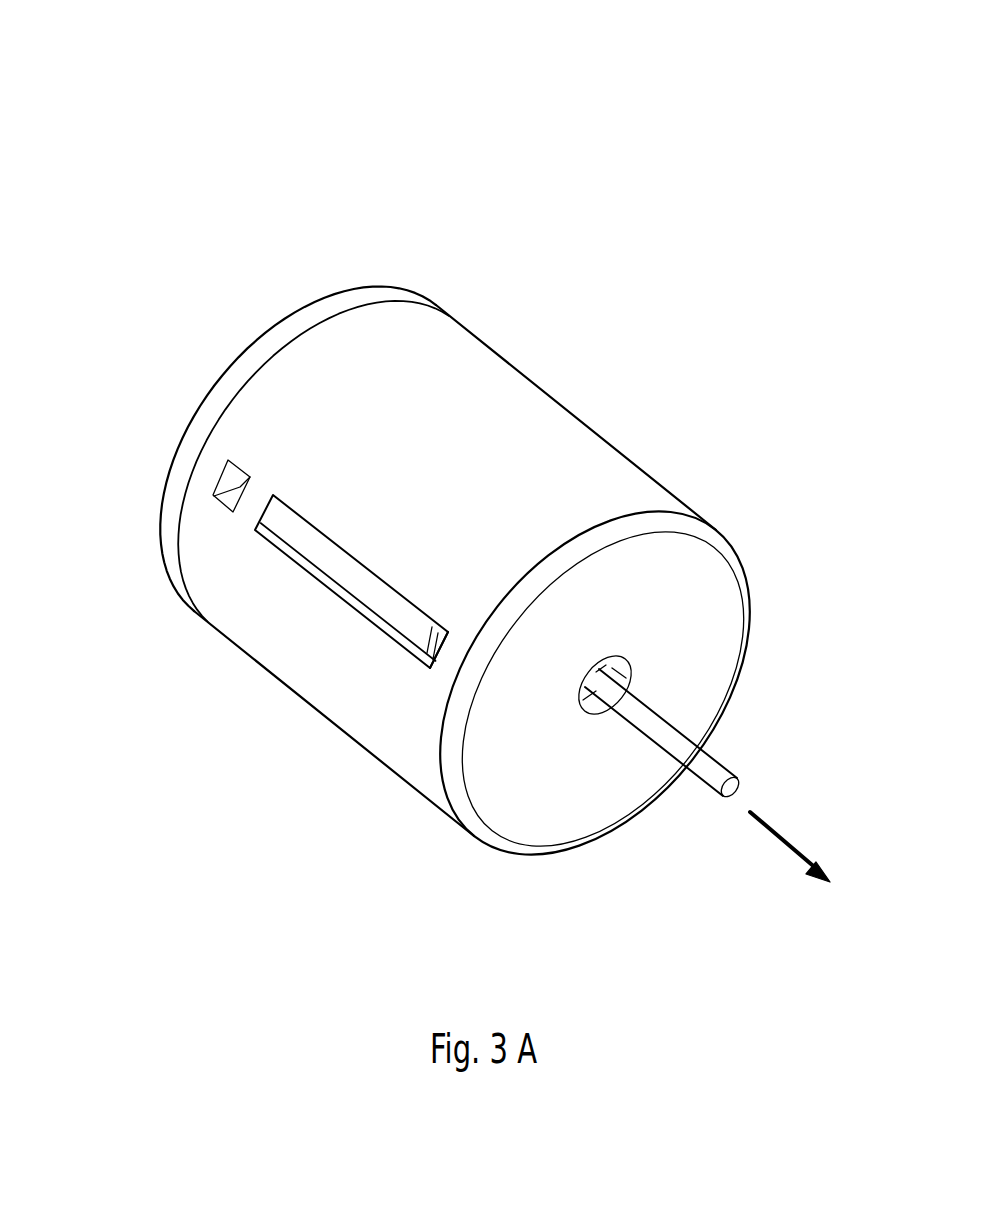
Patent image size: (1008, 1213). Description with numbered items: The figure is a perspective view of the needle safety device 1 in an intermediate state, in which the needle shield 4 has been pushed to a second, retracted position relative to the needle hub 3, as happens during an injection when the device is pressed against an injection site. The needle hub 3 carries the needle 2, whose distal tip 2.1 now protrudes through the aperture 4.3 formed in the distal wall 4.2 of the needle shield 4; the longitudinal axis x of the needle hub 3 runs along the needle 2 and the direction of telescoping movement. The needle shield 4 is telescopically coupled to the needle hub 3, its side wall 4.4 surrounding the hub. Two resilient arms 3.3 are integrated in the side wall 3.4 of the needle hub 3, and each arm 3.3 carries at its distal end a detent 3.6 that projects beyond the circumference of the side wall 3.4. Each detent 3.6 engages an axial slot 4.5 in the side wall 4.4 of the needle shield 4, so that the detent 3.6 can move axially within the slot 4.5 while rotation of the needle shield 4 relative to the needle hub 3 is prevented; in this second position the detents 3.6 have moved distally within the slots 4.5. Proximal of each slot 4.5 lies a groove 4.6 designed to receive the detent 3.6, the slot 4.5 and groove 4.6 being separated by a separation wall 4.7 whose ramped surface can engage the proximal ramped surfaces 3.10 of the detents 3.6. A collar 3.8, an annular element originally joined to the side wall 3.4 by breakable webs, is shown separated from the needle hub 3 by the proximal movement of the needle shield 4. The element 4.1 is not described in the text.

The needle safety device 1 is at (625, 195).
The needle 2 is at (702, 779).
The distal tip 2.1 is at (730, 790).
The needle hub 3 is at (316, 627).
The resilient arms 3.3 is at (412, 643).
The side wall 3.4 is at (305, 540).
The detent 3.6 is at (428, 655).
The collar 3.8 is at (395, 292).
The proximal ramped surfaces 3.10 is at (433, 623).
The needle shield 4 is at (460, 582).
The end wall 4.1 is at (712, 622).
The distal wall 4.2 is at (547, 805).
The aperture 4.3 is at (628, 668).
The side wall 4.4 is at (490, 375).
The axial slots 4.5 is at (340, 590).
The groove 4.6 is at (215, 490).
The separation wall 4.7 is at (253, 507).
The longitudinal axis x is at (777, 840).